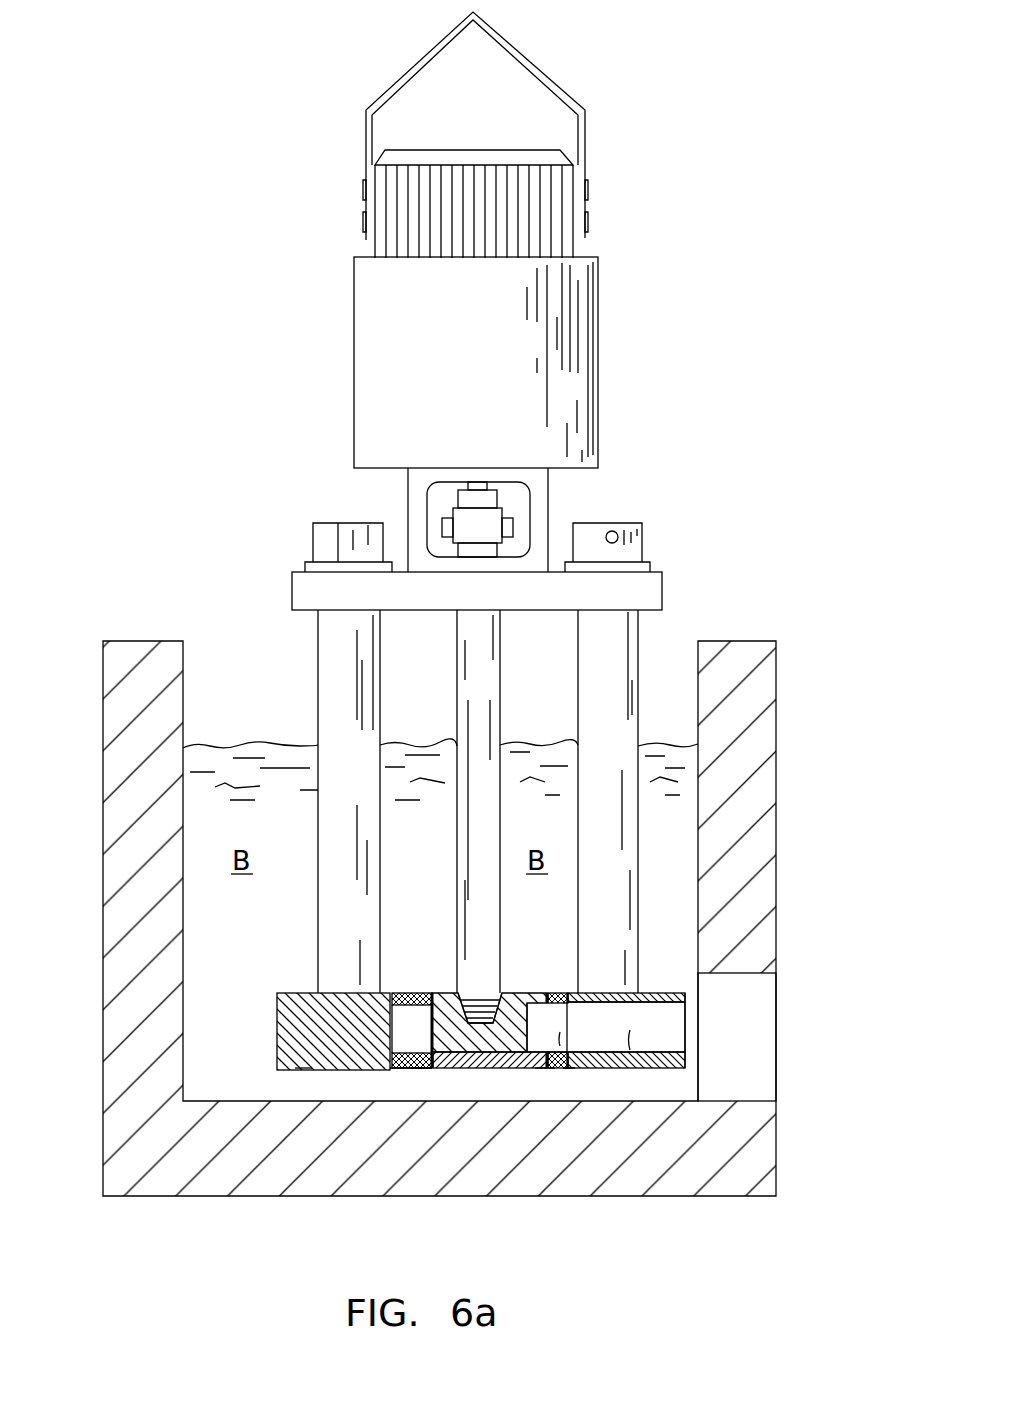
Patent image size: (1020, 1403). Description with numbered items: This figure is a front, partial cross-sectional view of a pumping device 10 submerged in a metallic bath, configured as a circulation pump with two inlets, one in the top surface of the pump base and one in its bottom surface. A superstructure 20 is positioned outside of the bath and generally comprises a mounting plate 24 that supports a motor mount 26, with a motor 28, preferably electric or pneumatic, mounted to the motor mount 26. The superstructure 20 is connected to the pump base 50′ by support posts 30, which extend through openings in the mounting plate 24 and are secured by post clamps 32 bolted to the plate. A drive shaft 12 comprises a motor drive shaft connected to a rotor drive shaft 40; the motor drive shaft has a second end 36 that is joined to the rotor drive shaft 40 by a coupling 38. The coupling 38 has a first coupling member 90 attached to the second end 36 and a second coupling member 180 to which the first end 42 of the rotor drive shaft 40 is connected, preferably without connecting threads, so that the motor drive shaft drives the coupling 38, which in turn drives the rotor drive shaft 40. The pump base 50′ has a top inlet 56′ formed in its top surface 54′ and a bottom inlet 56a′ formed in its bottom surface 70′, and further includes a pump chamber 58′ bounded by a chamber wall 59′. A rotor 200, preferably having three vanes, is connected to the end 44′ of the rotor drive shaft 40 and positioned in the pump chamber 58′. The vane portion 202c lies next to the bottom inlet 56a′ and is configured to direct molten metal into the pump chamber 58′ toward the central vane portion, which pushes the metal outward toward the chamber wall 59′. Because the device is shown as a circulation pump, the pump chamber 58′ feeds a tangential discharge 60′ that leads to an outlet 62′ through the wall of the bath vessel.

The pumping device 10 is at (773, 38).
The drive shaft 12 is at (441, 650).
The superstructure 20 is at (718, 541).
The mounting plate 24 is at (663, 592).
The motor mount 26 is at (503, 510).
The motor 28 is at (580, 249).
The support posts 30 is at (640, 648).
The post clamps 32 is at (313, 541).
The second end of motor drive shaft 36 is at (468, 484).
The coupling 38 is at (447, 515).
The rotor drive shaft 40 is at (501, 671).
The first end of rotor shaft 42 is at (498, 550).
The shaft bore 44′ is at (480, 993).
The pump base 50′ is at (282, 938).
The top surface 54′ is at (300, 993).
The top inlet 56′ is at (433, 993).
The bottom inlet 56a′ is at (423, 1070).
The pump chamber 58′ is at (398, 993).
The chamber wall 59′ is at (393, 1071).
The tangential discharge 60′ is at (625, 1069).
The outlet 62′ is at (686, 1040).
The bottom surface 70′ is at (303, 1070).
The first coupling member 90 is at (530, 495).
The second coupling member 180 is at (514, 530).
The rotor 200 is at (444, 1075).
The vane portion 202c is at (545, 1070).